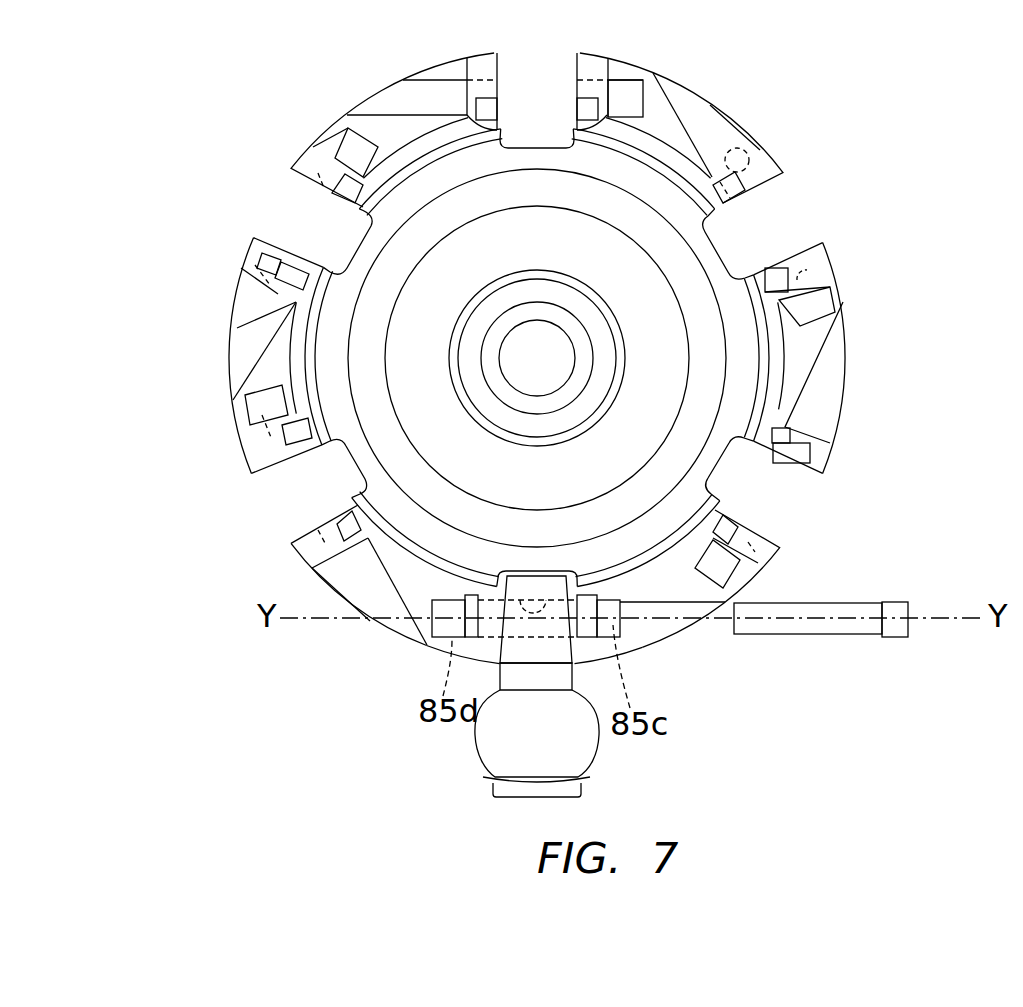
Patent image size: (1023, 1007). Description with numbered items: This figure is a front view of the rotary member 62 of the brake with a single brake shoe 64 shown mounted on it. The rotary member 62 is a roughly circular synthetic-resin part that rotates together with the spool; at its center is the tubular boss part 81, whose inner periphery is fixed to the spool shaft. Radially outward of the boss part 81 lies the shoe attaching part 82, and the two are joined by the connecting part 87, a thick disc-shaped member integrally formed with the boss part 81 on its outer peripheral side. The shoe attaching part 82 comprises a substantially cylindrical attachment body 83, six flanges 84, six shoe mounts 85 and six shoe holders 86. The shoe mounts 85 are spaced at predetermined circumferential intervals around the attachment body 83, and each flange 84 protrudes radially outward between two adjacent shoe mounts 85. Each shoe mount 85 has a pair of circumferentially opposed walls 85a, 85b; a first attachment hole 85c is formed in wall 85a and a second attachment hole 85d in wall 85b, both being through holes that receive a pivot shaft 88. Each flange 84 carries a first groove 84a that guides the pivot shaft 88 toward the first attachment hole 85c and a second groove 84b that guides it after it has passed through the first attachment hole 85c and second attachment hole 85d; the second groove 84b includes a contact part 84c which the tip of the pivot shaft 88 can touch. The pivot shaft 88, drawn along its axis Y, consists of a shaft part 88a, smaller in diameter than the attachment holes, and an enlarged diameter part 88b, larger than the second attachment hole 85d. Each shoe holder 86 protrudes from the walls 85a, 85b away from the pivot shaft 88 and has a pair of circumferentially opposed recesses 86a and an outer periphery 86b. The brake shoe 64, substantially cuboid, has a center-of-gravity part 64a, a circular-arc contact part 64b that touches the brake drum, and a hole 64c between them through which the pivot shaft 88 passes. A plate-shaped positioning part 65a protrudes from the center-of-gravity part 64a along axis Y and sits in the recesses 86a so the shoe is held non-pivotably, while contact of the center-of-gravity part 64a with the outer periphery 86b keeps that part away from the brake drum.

The rotary member 62 is at (218, 100).
The boss part 81 is at (537, 292).
The shoe attaching part 82 is at (214, 333).
The attachment body 83 is at (604, 203).
The flange 84 is at (935, 302).
The first groove 84a is at (833, 350).
The second groove 84b is at (830, 300).
The contact part 84c is at (820, 392).
The shoe mount 85 is at (920, 127).
The wall 85a is at (782, 180).
The wall 85b is at (805, 228).
The first attachment hole 85c is at (728, 162).
The second attachment hole 85d is at (800, 259).
The shoe holder 86 is at (930, 438).
The recess 86a is at (740, 512).
The outer periphery 86b is at (760, 520).
The connecting part 87 is at (427, 293).
The pivot shaft 88 is at (955, 738).
The shaft part 88a is at (811, 628).
The enlarged diameter part 88b is at (893, 627).
The brake shoe 64 is at (610, 763).
The center-of-gravity part 64a is at (488, 788).
The contact part 64b is at (524, 570).
The hole 64c is at (548, 598).
The positioning part 65a is at (497, 750).